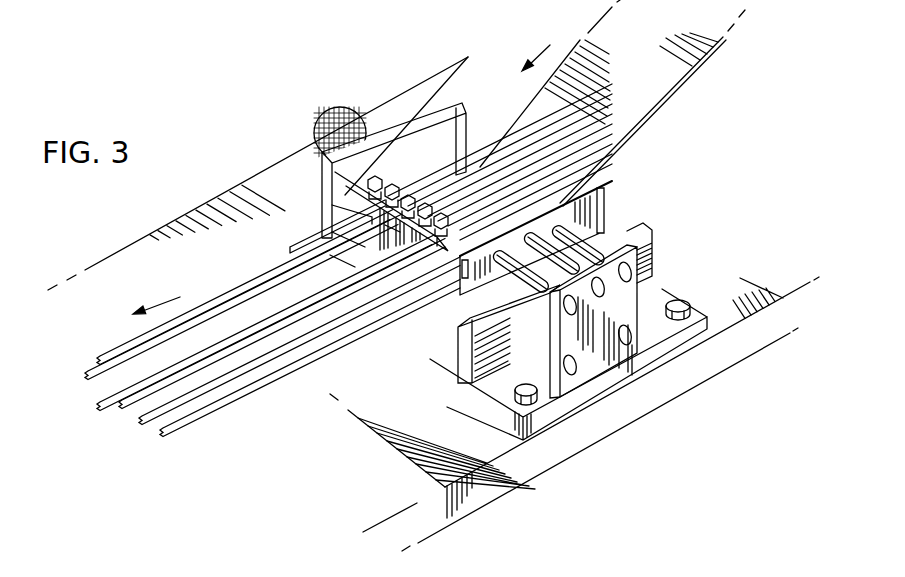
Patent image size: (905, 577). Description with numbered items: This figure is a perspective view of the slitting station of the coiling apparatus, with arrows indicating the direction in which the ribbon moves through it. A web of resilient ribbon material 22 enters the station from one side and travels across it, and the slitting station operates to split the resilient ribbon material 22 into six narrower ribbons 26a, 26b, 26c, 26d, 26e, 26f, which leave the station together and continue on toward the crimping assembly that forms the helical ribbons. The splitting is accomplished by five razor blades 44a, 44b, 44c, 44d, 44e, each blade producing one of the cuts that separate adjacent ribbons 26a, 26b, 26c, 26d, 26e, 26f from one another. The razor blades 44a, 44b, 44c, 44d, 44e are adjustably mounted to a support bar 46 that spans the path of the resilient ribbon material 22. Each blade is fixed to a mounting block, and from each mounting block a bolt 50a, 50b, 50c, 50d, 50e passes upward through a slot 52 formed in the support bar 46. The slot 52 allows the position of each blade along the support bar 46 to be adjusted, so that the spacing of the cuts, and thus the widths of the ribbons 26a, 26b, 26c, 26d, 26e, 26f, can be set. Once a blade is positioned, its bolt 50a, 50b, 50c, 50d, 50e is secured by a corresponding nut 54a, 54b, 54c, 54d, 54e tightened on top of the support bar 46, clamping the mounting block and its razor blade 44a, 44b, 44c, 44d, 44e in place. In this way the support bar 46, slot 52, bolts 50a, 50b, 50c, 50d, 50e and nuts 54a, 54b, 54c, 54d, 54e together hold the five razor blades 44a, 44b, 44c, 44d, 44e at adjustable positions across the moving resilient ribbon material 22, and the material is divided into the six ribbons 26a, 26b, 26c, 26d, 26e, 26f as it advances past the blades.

The resilient ribbon material 22 is at (657, 90).
The ribbon 26a is at (213, 404).
The ribbon 26b is at (165, 410).
The ribbon 26c is at (152, 438).
The ribbon 26d is at (110, 394).
The ribbon 26e is at (110, 362).
The ribbon 26f is at (127, 340).
The razor blade 44a is at (440, 228).
The razor blade 44b is at (392, 222).
The razor blade 44c is at (330, 262).
The razor blade 44d is at (327, 240).
The razor blade 44e is at (337, 213).
The support bar 46 is at (375, 182).
The bolt 50a is at (593, 190).
The bolt 50b is at (563, 177).
The bolt 50c is at (420, 180).
The bolt 50d is at (393, 177).
The bolt 50e is at (377, 183).
The slot 52 is at (330, 150).
The nut 54a is at (455, 213).
The nut 54b is at (443, 210).
The nut 54c is at (428, 188).
The nut 54d is at (397, 187).
The nut 54e is at (363, 177).